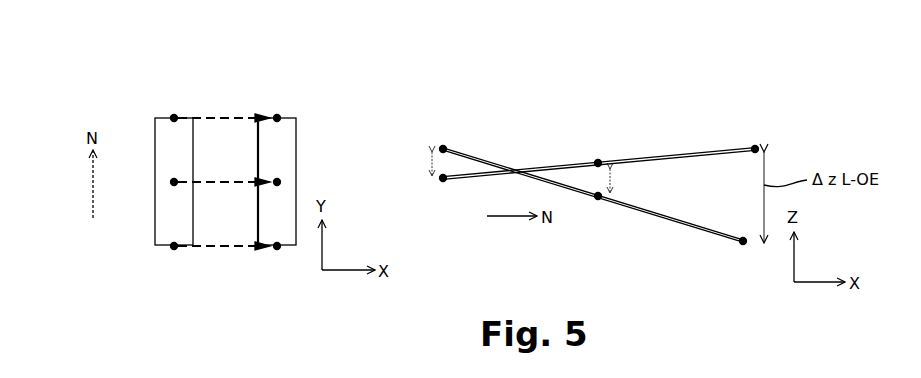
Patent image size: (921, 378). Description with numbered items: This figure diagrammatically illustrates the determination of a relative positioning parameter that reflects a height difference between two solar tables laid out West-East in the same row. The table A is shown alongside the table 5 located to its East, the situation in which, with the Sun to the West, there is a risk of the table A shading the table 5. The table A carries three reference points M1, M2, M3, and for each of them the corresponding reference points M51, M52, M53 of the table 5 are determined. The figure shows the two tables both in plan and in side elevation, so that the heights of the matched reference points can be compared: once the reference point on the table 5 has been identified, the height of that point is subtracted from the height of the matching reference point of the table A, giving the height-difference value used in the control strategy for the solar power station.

The table 5 is at (280, 140).
The table A is at (173, 152).
The reference point M1 is at (174, 114).
The reference point M2 is at (174, 186).
The reference point M3 is at (174, 250).
The reference point M51 is at (277, 114).
The reference point M52 is at (280, 181).
The reference point M53 is at (277, 250).